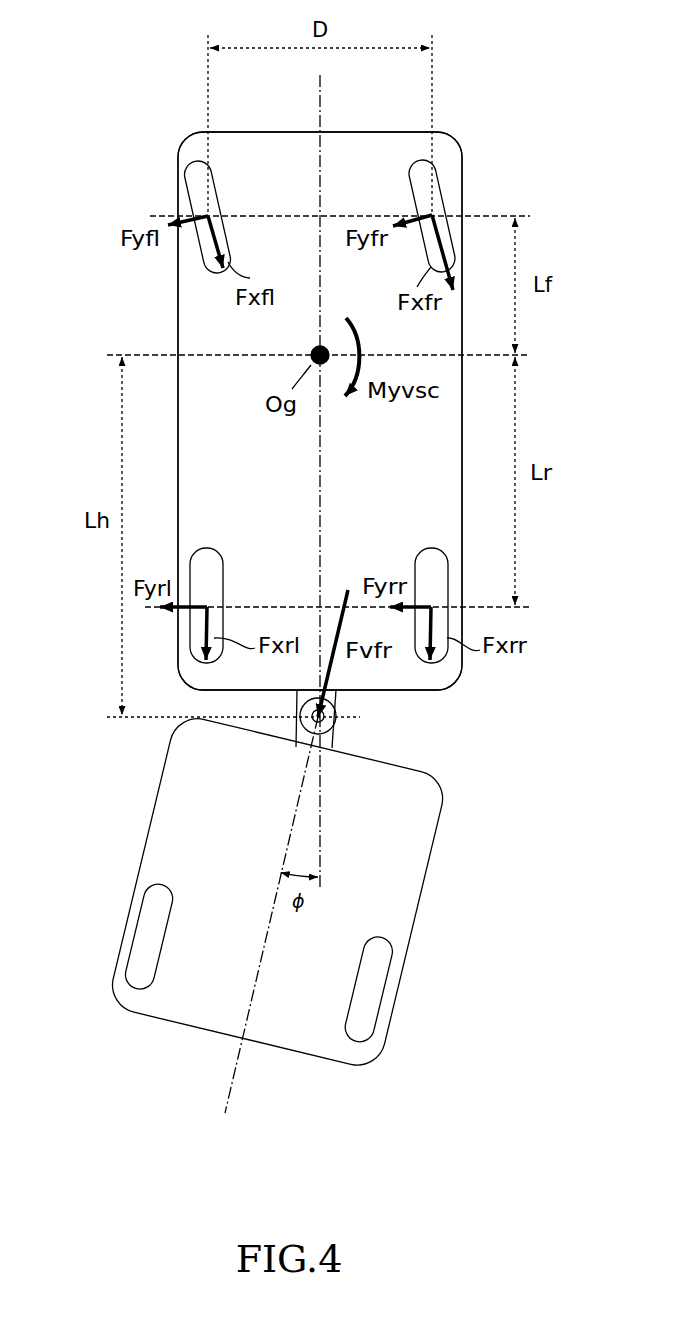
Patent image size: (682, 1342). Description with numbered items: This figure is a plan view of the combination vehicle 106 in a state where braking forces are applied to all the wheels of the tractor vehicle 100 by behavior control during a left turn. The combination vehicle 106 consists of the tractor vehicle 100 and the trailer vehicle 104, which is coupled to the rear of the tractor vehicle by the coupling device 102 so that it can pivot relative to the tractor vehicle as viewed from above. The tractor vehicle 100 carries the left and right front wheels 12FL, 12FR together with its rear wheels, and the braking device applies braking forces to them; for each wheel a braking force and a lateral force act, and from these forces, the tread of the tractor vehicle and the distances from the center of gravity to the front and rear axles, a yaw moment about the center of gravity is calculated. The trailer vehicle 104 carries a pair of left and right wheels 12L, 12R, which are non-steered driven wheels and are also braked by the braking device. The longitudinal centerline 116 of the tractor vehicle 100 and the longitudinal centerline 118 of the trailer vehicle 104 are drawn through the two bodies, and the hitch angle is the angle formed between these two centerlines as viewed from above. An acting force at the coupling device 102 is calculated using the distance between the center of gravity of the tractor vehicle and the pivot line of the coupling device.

The tractor vehicle 100 is at (340, 132).
The combination vehicle 106 is at (465, 137).
The left front wheel 12FL is at (182, 182).
The right front wheel 12FR is at (443, 192).
The longitudinal centerline of the tractor vehicle 116 is at (321, 496).
The coupling device 102 is at (372, 720).
The trailer vehicle 104 is at (431, 860).
The left wheel of the trailer vehicle 12L is at (140, 928).
The right wheel of the trailer vehicle 12R is at (383, 988).
The longitudinal centerline of the trailer vehicle 118 is at (232, 1080).